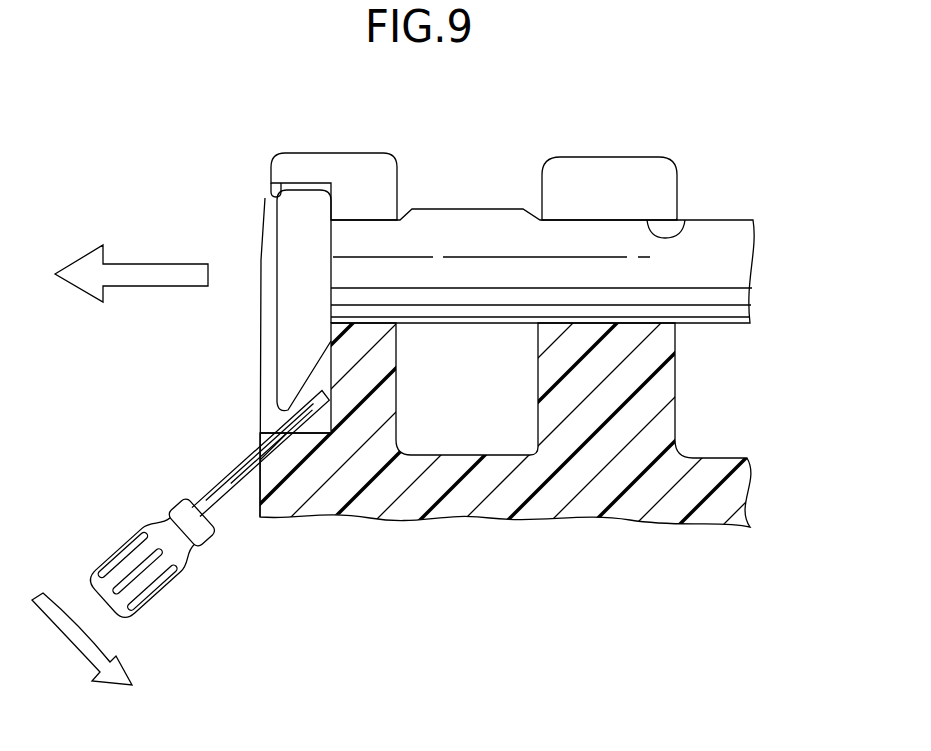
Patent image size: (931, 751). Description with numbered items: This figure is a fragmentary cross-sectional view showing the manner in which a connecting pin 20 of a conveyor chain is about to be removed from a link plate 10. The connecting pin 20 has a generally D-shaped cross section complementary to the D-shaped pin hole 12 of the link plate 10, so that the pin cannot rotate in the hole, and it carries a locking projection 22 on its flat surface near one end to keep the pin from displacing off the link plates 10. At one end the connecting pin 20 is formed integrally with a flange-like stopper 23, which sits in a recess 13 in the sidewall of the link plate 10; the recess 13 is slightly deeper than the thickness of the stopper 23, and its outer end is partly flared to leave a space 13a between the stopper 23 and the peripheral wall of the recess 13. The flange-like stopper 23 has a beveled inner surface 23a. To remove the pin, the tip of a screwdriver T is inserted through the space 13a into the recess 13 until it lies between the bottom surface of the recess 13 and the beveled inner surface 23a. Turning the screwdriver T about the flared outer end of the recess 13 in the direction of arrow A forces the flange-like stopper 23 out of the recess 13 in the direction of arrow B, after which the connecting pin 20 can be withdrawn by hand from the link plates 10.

The link plate 10 is at (458, 512).
The pin hole 12 is at (682, 221).
The recess 13 is at (265, 198).
The space 13a is at (268, 416).
The connecting pin 20 is at (786, 251).
The locking projection 22 is at (463, 207).
The flange-like stopper 23 is at (297, 215).
The beveled inner surface 23a is at (322, 362).
The screwdriver T is at (168, 587).
The arrow A is at (70, 652).
The arrow B is at (147, 263).